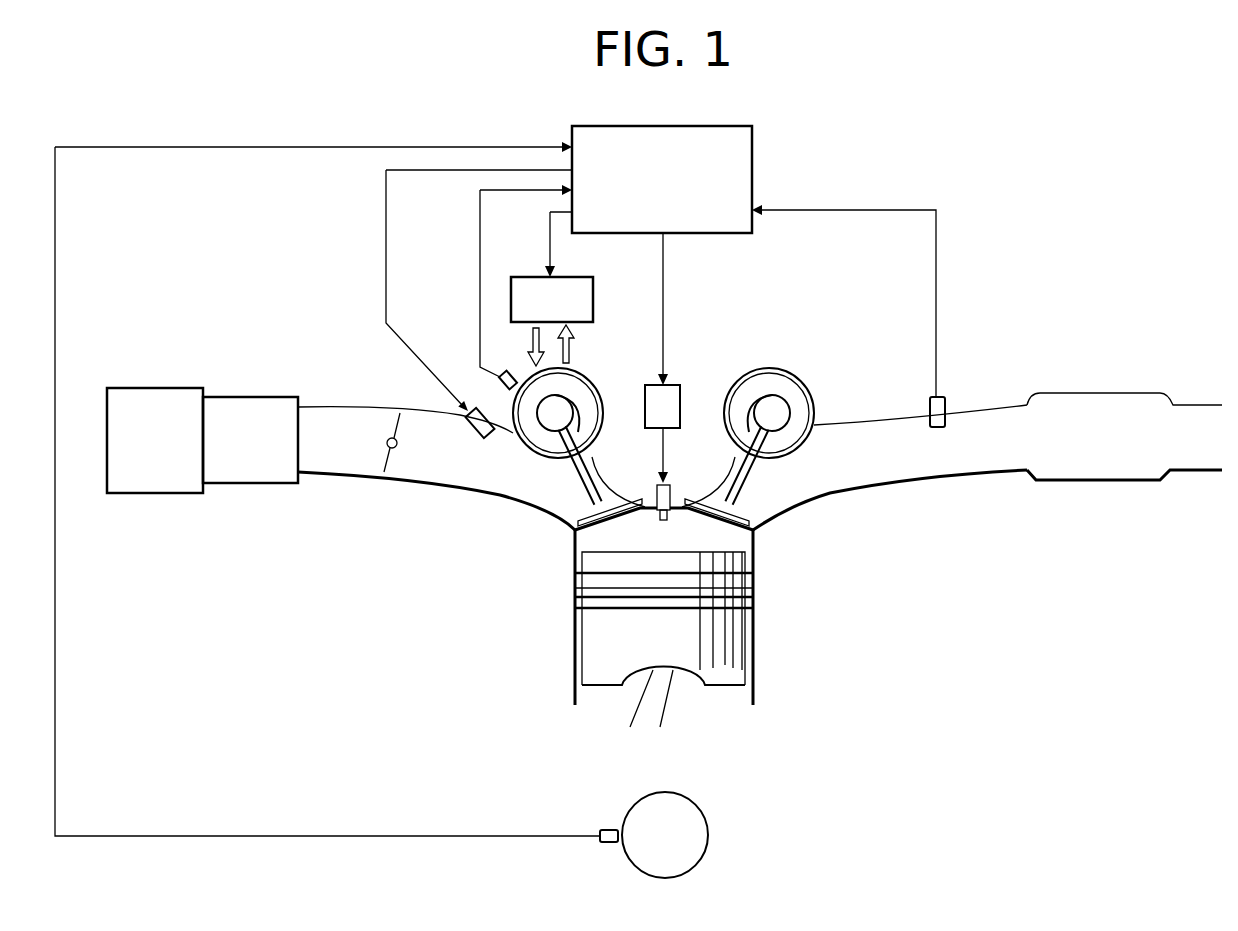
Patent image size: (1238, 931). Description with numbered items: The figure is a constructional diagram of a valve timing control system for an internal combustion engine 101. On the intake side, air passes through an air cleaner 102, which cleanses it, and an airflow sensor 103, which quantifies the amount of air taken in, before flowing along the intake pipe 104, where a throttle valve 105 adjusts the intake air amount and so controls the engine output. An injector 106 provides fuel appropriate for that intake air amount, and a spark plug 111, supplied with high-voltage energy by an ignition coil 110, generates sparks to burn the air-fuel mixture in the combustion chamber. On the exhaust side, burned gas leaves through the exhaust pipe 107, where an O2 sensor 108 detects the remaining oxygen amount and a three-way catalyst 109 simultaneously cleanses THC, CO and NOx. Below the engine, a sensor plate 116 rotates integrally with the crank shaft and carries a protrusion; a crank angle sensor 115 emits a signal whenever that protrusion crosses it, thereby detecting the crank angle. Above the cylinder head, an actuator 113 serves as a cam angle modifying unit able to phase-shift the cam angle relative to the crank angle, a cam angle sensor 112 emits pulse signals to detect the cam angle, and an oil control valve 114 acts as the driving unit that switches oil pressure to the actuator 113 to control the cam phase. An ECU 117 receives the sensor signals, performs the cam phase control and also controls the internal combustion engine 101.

The internal combustion engine 101 is at (753, 635).
The air cleaner 102 is at (153, 388).
The airflow sensor 103 is at (250, 397).
The intake pipe 104 is at (332, 483).
The throttle valve 105 is at (392, 477).
The injector 106 is at (468, 405).
The exhaust pipe 107 is at (893, 483).
The O2 sensor 108 is at (938, 392).
The three-way catalyst 109 is at (1095, 480).
The ignition coil 110 is at (680, 385).
The spark plug 111 is at (668, 484).
The cam angle sensor 112 is at (503, 374).
The actuator 113 is at (582, 370).
The oil control valve 114 is at (572, 277).
The crank angle sensor 115 is at (608, 830).
The sensor plate 116 is at (702, 808).
The ECU 117 is at (752, 153).